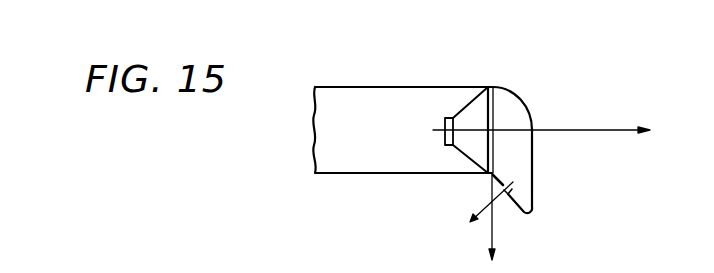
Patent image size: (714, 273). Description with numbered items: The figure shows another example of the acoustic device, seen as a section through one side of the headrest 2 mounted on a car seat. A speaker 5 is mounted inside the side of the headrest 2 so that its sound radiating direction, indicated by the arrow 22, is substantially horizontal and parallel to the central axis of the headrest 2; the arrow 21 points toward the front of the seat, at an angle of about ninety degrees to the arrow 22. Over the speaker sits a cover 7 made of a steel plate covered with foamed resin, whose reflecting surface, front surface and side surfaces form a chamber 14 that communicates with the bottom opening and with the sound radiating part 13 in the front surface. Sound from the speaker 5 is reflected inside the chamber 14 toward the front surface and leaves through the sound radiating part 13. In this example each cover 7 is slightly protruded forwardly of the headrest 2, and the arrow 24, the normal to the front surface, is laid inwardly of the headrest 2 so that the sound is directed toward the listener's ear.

The headrest 2 is at (377, 87).
The speaker 5 is at (445, 124).
The chamber 14 is at (508, 91).
The cover 7 is at (534, 148).
The sound radiating part 13 is at (508, 197).
The arrow indicating the normal to the front surface 24 is at (482, 205).
The arrow indicating the direction of the front of the seat 21 is at (486, 234).
The arrow indicating the speaker's sound radiating direction 22 is at (603, 129).